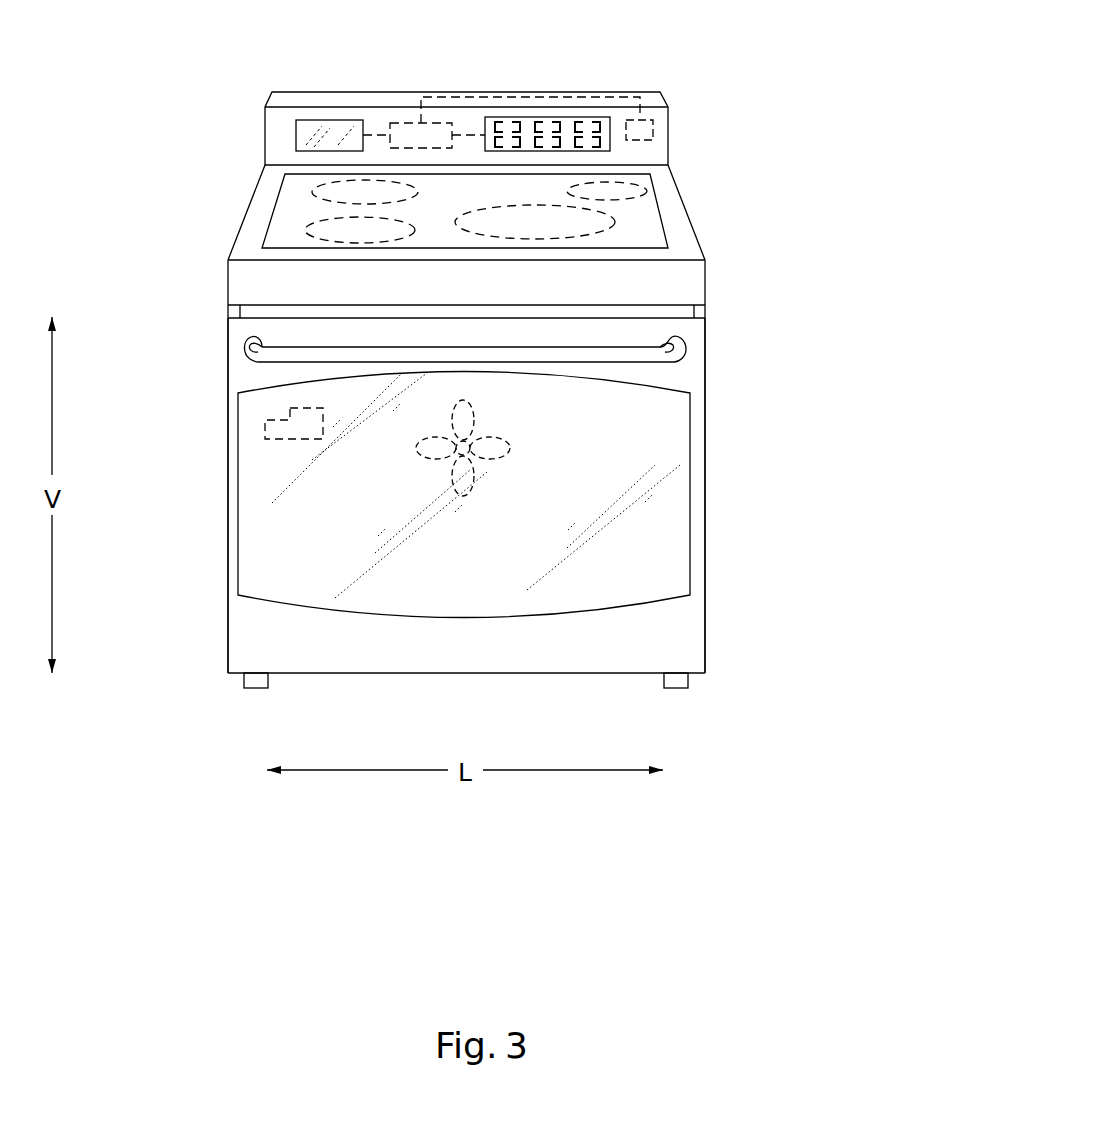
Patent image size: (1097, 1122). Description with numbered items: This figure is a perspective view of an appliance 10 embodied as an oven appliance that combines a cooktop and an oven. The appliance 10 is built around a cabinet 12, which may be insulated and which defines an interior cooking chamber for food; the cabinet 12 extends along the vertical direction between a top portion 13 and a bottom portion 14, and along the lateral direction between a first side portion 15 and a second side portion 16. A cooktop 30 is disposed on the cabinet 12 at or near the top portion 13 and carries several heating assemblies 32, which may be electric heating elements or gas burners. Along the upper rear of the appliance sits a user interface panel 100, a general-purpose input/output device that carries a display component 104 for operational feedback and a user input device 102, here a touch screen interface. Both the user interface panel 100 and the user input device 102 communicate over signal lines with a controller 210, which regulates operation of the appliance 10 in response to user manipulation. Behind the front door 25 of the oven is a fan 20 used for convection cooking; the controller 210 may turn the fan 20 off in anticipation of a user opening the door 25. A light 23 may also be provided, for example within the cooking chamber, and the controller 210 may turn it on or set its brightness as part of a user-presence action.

The appliance 10 is at (848, 120).
The cabinet 12 is at (240, 312).
The top portion 13 is at (713, 262).
The bottom portion 14 is at (714, 671).
The first side portion 15 is at (212, 479).
The second side portion 16 is at (714, 479).
The fan 20 is at (513, 448).
The light 23 is at (265, 425).
The door 25 is at (272, 556).
The cooktop 30 is at (277, 187).
The heating assemblies 32 is at (303, 225).
The user interface panel 100 is at (650, 86).
The user input device 102 is at (548, 117).
The display component 104 is at (330, 120).
The controller 210 is at (400, 121).